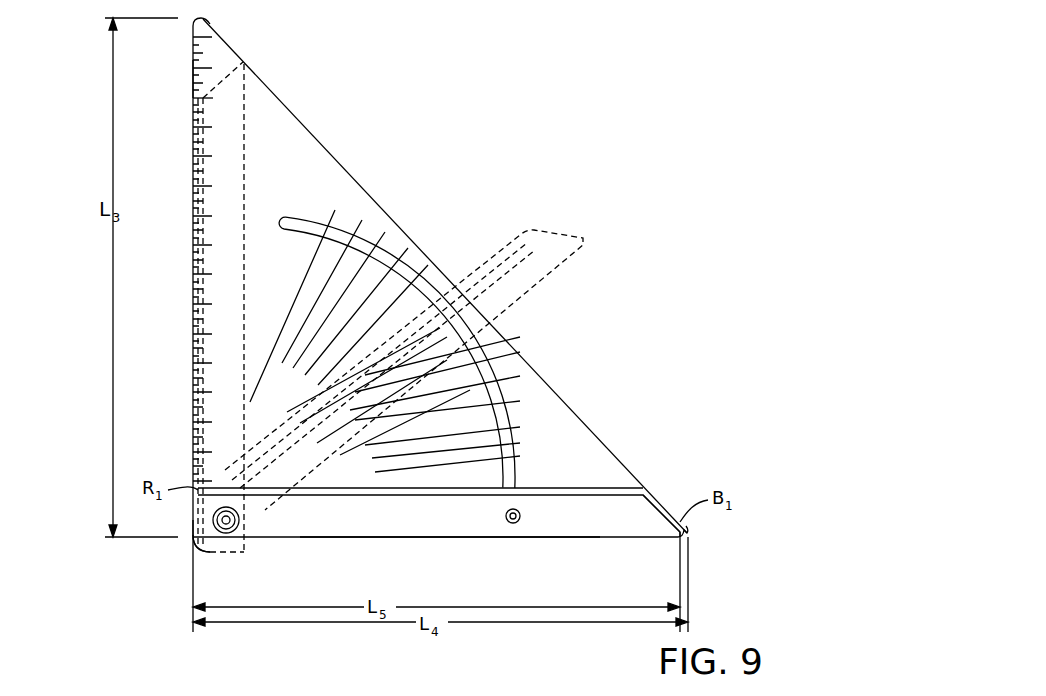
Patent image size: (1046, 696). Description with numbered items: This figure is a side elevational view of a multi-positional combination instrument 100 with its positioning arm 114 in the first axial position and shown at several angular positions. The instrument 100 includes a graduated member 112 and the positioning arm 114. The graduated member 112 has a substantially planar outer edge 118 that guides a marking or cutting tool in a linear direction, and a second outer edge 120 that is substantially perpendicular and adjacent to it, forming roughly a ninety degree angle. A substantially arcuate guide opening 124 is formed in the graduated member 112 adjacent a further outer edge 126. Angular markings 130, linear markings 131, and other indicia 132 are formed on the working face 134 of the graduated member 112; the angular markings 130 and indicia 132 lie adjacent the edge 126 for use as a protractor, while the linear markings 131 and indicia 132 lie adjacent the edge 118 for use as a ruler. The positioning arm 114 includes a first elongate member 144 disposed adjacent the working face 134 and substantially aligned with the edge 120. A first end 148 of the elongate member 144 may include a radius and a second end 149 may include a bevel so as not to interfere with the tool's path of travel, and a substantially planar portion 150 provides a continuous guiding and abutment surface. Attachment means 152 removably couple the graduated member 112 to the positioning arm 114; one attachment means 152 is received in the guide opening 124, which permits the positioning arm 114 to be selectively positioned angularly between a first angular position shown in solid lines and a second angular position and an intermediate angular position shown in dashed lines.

The multi-positional combination instrument 100 is at (90, 40).
The graduated member 112 is at (193, 97).
The positioning arm 114 is at (243, 88).
The outer edge 118 is at (198, 128).
The second outer edge 120 is at (688, 548).
The guide opening 124 is at (287, 220).
The outer edge 126 is at (448, 290).
The angular markings 130 is at (373, 320).
The linear markings 131 is at (198, 162).
The indicia 132 is at (198, 200).
The working face 134 is at (440, 277).
The first elongate member 144 is at (555, 525).
The first end 148 is at (195, 540).
The second end 149 is at (673, 535).
The planar portion 150 is at (612, 487).
The attachment means 152 is at (228, 535).